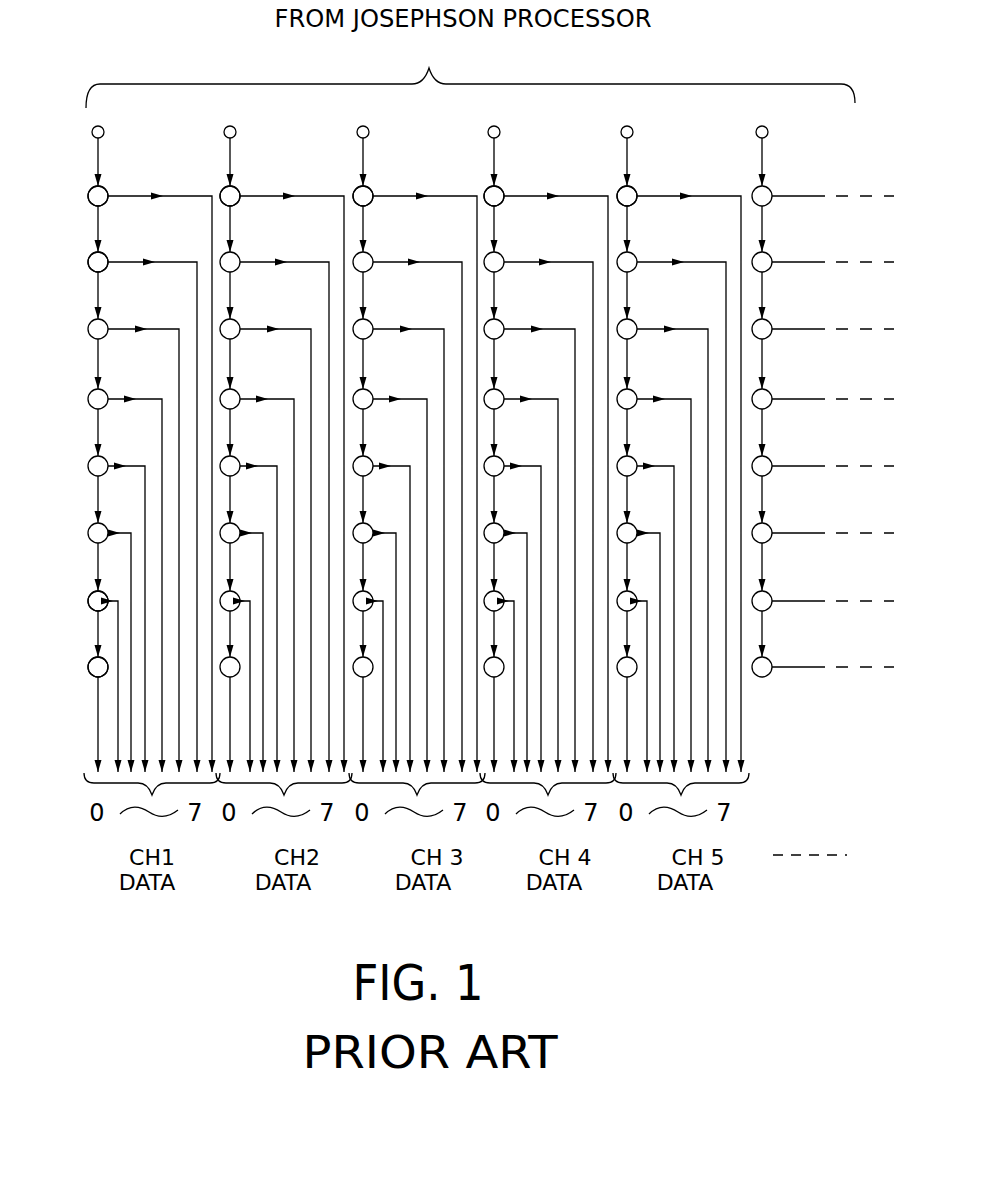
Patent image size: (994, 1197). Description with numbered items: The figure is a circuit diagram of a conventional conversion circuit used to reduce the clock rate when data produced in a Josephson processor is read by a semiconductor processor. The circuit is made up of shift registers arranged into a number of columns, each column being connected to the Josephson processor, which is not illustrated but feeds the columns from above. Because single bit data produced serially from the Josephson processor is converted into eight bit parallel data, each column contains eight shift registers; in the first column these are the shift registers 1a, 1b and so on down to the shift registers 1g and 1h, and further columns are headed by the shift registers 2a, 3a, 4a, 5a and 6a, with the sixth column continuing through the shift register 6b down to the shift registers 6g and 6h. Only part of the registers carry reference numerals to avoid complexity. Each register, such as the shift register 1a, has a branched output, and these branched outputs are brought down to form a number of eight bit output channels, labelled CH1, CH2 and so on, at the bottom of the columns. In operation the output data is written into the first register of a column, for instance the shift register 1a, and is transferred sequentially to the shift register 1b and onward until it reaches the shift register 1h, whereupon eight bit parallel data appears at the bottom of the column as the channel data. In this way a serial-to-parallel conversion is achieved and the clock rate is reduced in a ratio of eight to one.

The shift register 1a is at (91, 188).
The shift register 1b is at (90, 256).
The shift register 1g is at (89, 600).
The shift register 1h is at (89, 666).
The shift register 2a is at (222, 188).
The shift register 3a is at (355, 188).
The shift register 4a is at (486, 188).
The shift register 5a is at (619, 188).
The shift register 6a is at (754, 188).
The shift register 6b is at (768, 270).
The shift register 6g is at (768, 609).
The shift register 6h is at (768, 676).